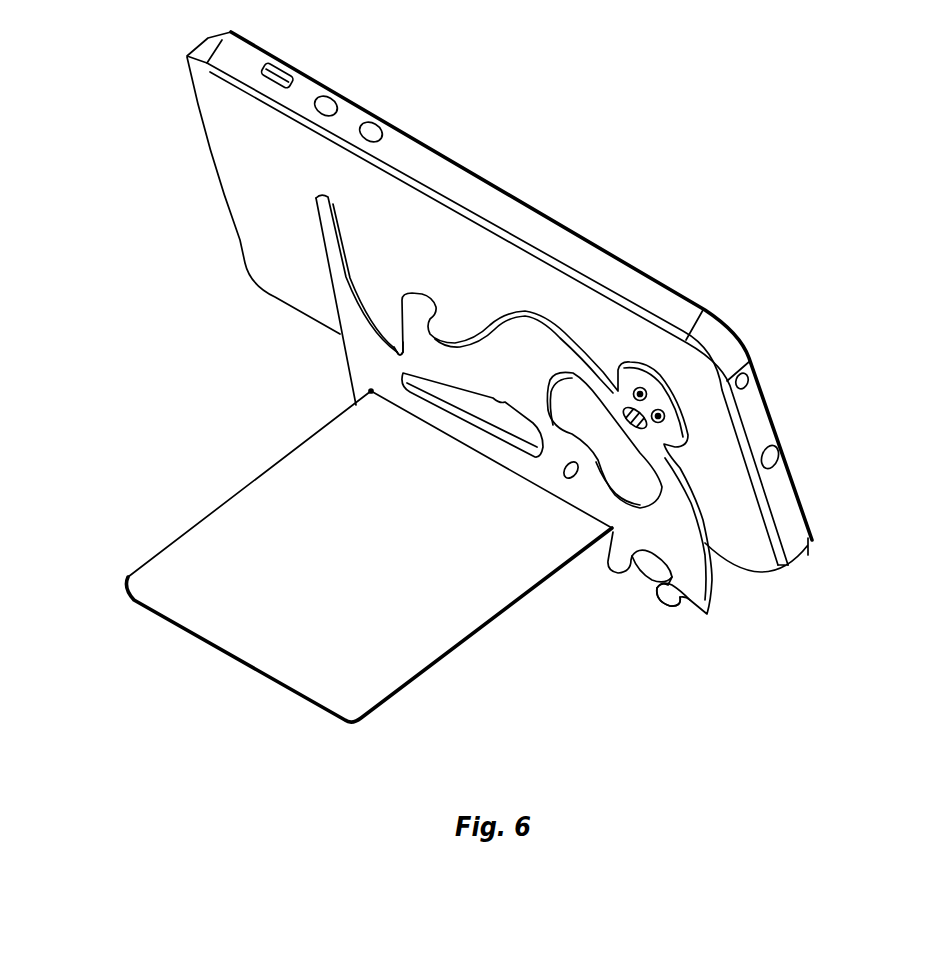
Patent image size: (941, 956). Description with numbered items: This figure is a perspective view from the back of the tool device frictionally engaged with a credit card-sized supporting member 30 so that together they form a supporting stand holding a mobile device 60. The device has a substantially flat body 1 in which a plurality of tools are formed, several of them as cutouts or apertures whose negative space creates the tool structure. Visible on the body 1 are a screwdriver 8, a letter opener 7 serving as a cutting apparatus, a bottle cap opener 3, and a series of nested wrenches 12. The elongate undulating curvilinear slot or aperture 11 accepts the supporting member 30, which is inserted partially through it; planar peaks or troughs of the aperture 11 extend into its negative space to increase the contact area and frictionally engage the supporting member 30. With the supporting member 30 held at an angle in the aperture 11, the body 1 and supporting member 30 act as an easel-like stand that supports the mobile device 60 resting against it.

The mobile device 60 is at (723, 483).
The body 1 is at (418, 341).
The screwdriver 8 is at (318, 197).
The letter opener 7 is at (383, 329).
The bottle cap opener 3 is at (645, 490).
The elongate undulating curvilinear slot or aperture 11 is at (697, 607).
The nested wrenches 12 is at (371, 391).
The supporting member 30 is at (492, 585).